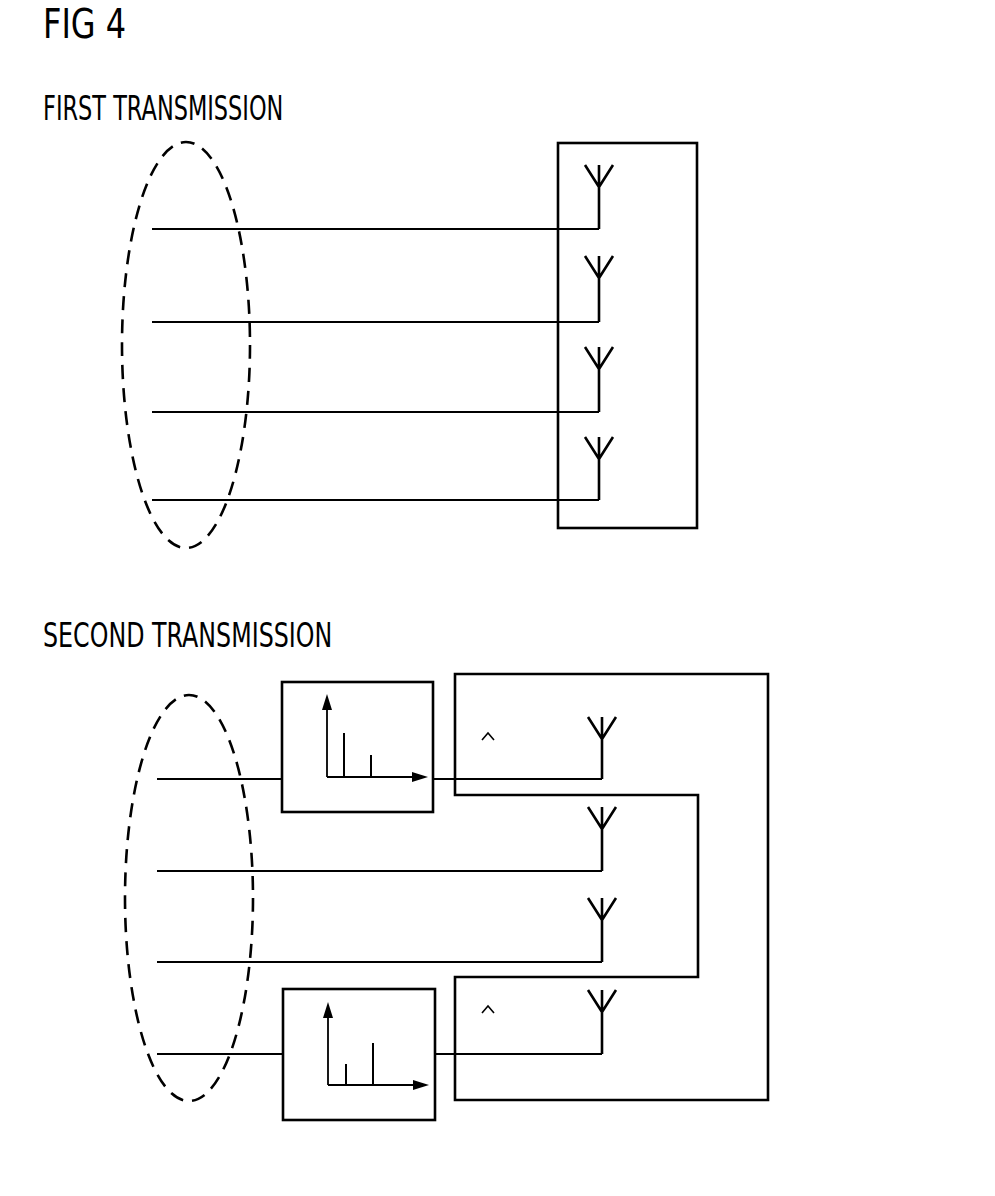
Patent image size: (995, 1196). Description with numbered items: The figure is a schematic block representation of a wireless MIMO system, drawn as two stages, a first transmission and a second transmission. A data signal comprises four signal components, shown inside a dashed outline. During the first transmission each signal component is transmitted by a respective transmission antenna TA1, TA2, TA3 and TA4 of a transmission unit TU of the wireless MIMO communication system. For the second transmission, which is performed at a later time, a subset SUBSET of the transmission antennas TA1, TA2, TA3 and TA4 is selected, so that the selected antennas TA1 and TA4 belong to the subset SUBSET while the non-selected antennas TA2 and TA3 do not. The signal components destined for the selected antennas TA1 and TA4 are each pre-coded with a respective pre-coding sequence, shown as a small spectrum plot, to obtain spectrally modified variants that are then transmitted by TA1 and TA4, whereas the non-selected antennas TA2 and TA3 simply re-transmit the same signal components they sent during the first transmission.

The first transmission antenna TA1 is at (630, 218).
The second transmission antenna TA2 is at (630, 311).
The third transmission antenna TA3 is at (630, 401).
The fourth transmission antenna TA4 is at (630, 489).
The transmission unit TU is at (727, 331).
The subset of transmission antennas SUBSET is at (617, 1128).